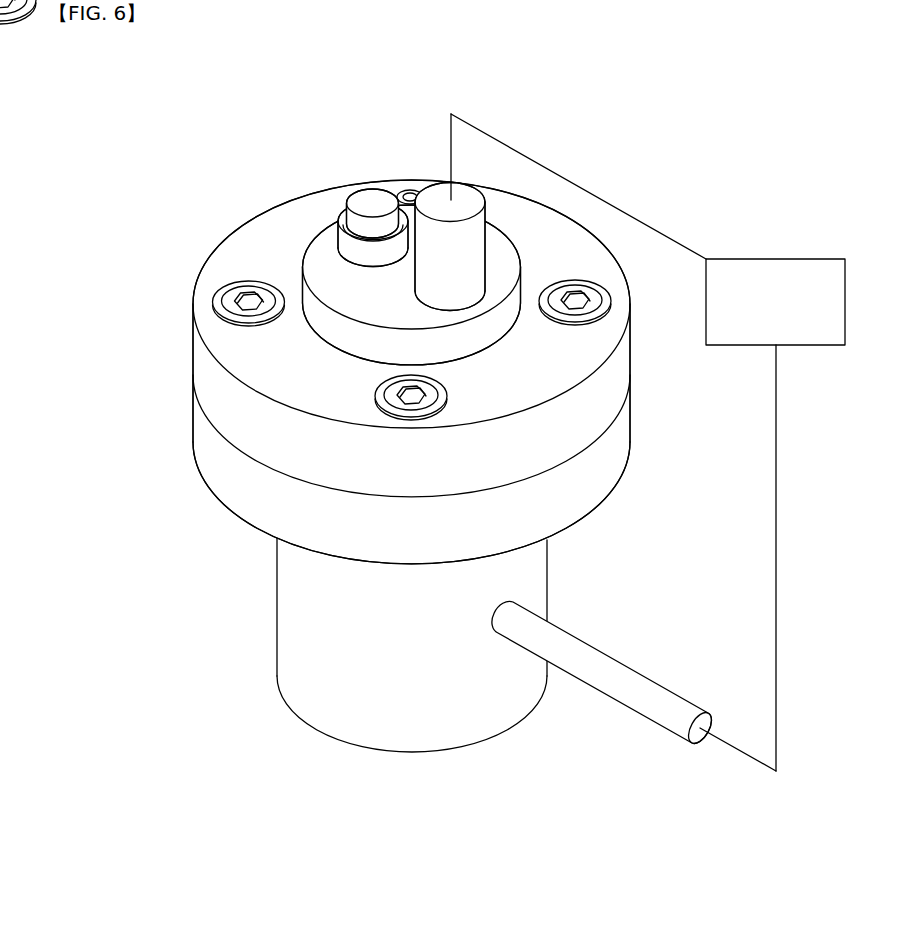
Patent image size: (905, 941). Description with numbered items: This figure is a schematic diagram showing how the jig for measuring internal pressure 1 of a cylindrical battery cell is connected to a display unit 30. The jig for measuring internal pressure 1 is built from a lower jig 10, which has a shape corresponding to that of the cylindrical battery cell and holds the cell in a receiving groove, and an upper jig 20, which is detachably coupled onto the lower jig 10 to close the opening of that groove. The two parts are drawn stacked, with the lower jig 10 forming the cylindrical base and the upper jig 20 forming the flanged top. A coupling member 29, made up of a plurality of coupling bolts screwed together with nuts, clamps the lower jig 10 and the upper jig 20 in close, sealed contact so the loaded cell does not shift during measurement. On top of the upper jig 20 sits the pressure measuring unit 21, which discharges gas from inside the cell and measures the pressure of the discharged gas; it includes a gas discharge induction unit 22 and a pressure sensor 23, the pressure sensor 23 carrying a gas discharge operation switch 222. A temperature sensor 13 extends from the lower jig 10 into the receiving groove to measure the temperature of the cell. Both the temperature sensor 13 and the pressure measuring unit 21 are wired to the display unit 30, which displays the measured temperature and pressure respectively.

The jig for measuring internal pressure 1 is at (135, 123).
The lower jig 10 is at (328, 522).
The temperature sensor 13 is at (678, 708).
The upper jig 20 is at (273, 453).
The pressure measuring unit 21 is at (323, 327).
The gas discharge induction unit 22 is at (340, 243).
The gas discharge operation switch 222 is at (372, 205).
The pressure sensor 23 is at (440, 192).
The coupling member 29 is at (230, 300).
The display unit 30 is at (648, 442).